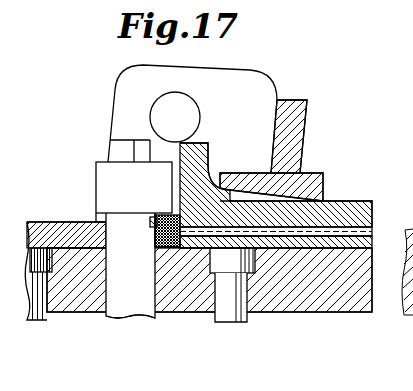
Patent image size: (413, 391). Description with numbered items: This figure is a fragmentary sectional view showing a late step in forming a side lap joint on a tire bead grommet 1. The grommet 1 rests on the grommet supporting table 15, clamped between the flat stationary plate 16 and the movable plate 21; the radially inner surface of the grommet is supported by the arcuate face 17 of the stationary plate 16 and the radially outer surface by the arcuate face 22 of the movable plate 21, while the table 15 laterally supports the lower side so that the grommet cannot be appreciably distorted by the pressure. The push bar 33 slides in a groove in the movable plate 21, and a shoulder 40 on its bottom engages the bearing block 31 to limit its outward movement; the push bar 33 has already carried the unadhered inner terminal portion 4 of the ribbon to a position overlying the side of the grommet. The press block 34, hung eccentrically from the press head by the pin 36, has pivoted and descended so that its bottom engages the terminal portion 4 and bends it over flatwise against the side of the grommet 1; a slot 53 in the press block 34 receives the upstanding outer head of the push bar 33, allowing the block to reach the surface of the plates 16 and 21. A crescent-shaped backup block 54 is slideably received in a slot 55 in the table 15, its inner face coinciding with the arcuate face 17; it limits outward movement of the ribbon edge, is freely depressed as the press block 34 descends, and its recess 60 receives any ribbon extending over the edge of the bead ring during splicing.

The tire bead grommet 1 is at (148, 240).
The inner terminal portion 4 is at (168, 215).
The grommet supporting table 15 is at (310, 300).
The flat stationary plate 16 is at (66, 209).
The arcuate face 17 is at (107, 222).
The movable plate 21 is at (370, 240).
The arcuate face 22 is at (181, 245).
The bearing block 31 is at (230, 226).
The push bar 33 is at (355, 212).
The press block 34 is at (270, 85).
The pin 36 is at (193, 108).
The shoulder 40 is at (280, 224).
The slot 53 is at (104, 168).
The backup block 54 is at (96, 212).
The slot 55 is at (100, 297).
The recess 60 is at (150, 217).